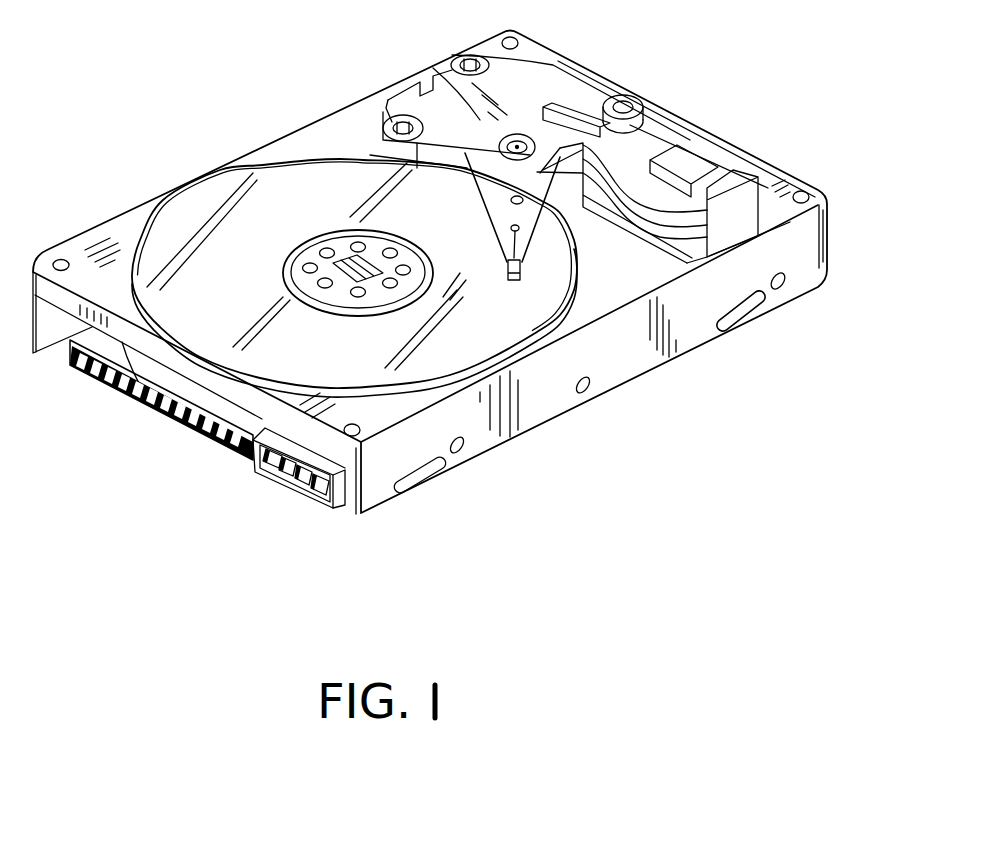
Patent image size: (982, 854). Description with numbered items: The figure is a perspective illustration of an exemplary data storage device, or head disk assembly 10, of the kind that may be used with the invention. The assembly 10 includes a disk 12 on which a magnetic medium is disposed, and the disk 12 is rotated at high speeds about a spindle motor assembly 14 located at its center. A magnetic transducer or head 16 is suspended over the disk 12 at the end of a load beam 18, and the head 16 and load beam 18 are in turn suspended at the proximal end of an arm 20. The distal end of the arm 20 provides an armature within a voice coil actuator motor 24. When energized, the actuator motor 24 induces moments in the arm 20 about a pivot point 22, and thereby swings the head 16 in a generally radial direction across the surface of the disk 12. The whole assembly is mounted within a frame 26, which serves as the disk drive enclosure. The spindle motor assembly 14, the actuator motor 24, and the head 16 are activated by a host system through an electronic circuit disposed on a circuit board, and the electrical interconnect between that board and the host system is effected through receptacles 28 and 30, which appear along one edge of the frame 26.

The assembly 10 is at (622, 418).
The disk 12 is at (188, 220).
The spindle motor assembly 14 is at (297, 248).
The head 16 is at (508, 268).
The load beam 18 is at (510, 220).
The arm 20 is at (662, 143).
The pivot point 22 is at (520, 137).
The voice coil actuator motor 24 is at (433, 68).
The frame 26 is at (790, 262).
The receptacle 28 is at (147, 407).
The receptacle 30 is at (283, 480).